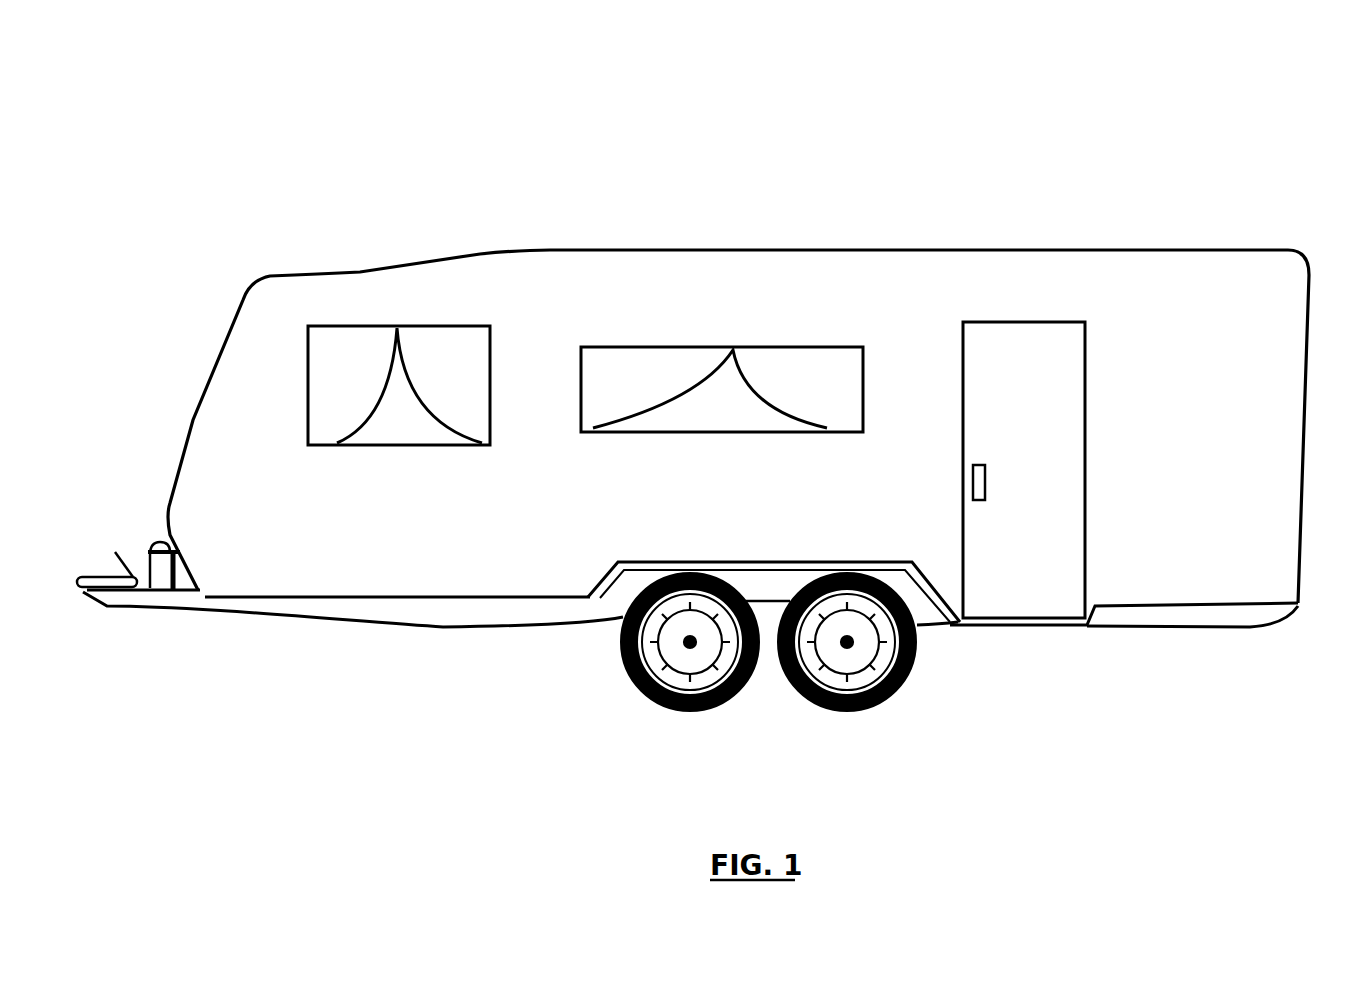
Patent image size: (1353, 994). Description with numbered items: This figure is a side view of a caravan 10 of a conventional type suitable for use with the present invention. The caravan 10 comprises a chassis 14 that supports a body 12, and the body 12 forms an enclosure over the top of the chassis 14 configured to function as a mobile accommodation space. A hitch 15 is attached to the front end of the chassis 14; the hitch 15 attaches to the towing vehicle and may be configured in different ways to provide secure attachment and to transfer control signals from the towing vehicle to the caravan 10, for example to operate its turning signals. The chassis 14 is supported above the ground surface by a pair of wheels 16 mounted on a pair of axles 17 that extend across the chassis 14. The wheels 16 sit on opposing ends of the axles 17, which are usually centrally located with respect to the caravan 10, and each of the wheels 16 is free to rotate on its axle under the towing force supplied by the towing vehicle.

The caravan 10 is at (1223, 175).
The body 12 is at (583, 249).
The chassis 14 is at (496, 613).
The hitch 15 is at (168, 594).
The wheels 16 is at (648, 695).
The axles 17 is at (690, 642).